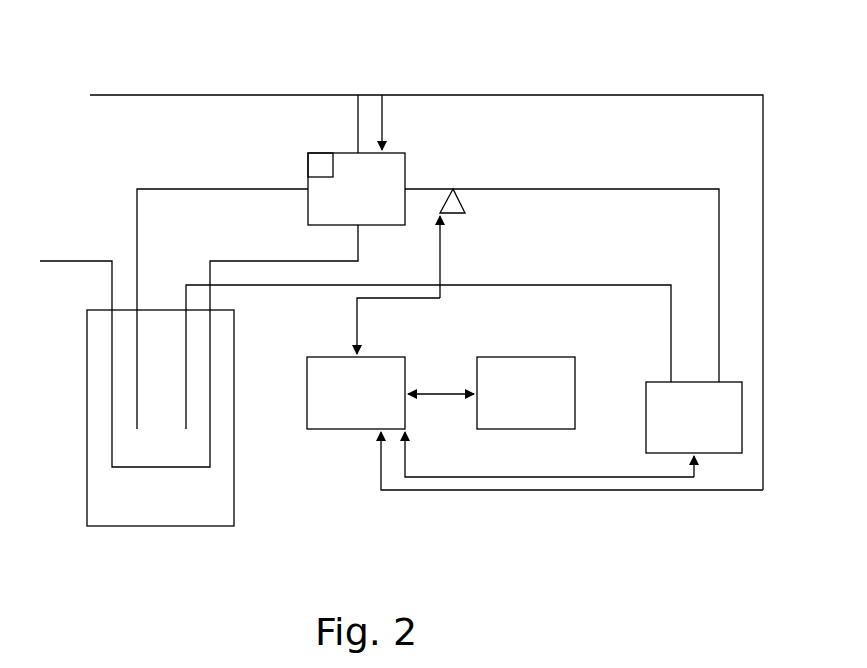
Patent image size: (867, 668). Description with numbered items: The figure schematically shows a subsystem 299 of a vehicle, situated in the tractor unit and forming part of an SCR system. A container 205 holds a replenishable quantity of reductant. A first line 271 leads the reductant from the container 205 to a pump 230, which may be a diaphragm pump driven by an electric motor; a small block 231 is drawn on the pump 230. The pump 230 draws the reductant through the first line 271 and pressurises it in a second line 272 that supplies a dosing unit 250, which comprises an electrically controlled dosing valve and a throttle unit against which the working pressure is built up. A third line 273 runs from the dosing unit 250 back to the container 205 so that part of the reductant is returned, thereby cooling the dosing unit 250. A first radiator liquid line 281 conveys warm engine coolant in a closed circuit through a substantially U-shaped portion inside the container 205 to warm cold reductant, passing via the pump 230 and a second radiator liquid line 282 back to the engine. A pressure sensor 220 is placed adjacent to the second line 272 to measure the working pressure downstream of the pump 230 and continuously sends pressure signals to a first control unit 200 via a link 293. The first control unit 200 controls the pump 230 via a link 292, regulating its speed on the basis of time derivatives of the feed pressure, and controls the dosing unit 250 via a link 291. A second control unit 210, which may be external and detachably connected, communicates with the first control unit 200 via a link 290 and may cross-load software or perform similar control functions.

The first control unit 200 is at (356, 393).
The container 205 is at (108, 527).
The second control unit 210 is at (526, 393).
The pressure sensor 220 is at (465, 213).
The pump 230 is at (356, 189).
The power supply indicator / port 231 is at (318, 158).
The dosing unit 250 is at (694, 417).
The first line 271 is at (196, 190).
The second line 272 is at (523, 190).
The third line 273 is at (655, 285).
The first radiator liquid line 281 is at (90, 260).
The second radiator liquid line 282 is at (190, 94).
The link 290 is at (433, 392).
The link 291 is at (575, 477).
The link 292 is at (597, 491).
The link 293 is at (356, 328).
The subsystem 299 is at (449, 58).